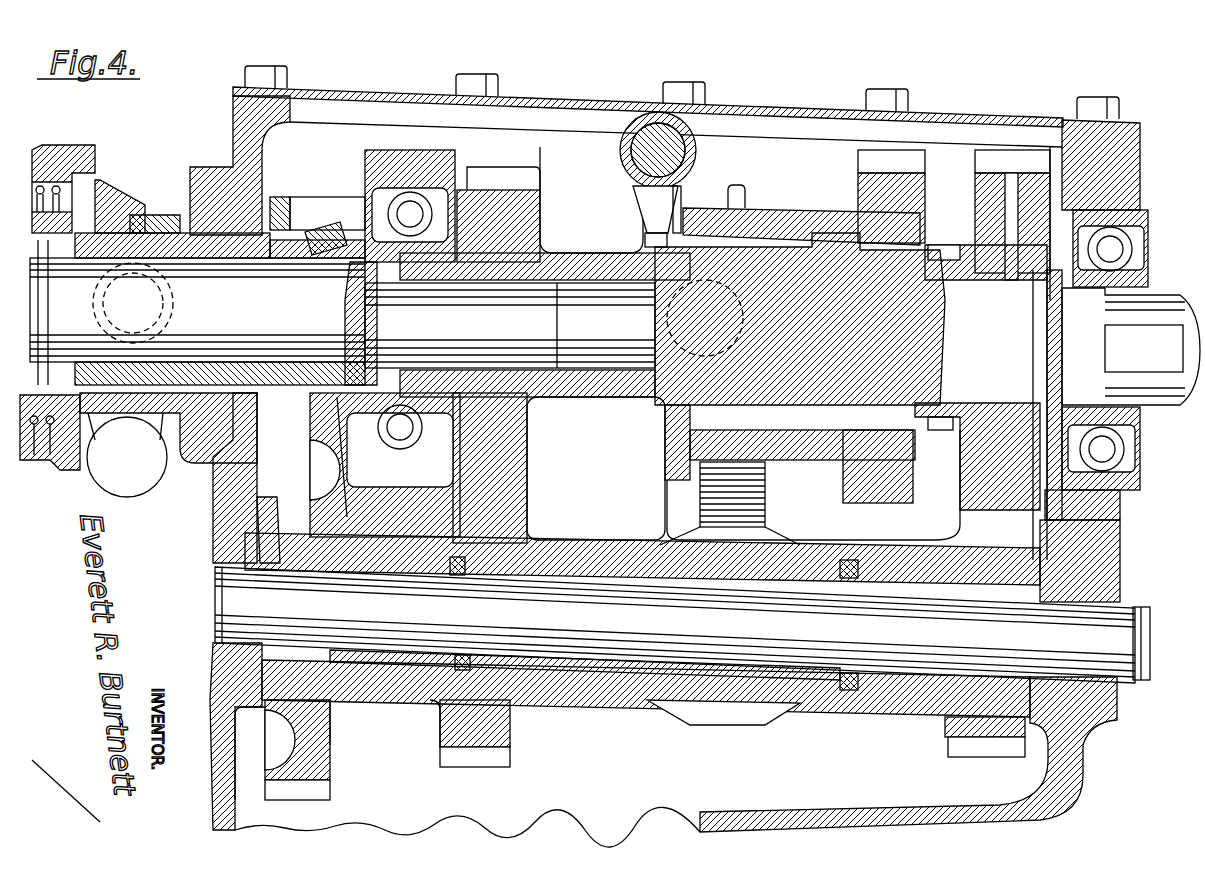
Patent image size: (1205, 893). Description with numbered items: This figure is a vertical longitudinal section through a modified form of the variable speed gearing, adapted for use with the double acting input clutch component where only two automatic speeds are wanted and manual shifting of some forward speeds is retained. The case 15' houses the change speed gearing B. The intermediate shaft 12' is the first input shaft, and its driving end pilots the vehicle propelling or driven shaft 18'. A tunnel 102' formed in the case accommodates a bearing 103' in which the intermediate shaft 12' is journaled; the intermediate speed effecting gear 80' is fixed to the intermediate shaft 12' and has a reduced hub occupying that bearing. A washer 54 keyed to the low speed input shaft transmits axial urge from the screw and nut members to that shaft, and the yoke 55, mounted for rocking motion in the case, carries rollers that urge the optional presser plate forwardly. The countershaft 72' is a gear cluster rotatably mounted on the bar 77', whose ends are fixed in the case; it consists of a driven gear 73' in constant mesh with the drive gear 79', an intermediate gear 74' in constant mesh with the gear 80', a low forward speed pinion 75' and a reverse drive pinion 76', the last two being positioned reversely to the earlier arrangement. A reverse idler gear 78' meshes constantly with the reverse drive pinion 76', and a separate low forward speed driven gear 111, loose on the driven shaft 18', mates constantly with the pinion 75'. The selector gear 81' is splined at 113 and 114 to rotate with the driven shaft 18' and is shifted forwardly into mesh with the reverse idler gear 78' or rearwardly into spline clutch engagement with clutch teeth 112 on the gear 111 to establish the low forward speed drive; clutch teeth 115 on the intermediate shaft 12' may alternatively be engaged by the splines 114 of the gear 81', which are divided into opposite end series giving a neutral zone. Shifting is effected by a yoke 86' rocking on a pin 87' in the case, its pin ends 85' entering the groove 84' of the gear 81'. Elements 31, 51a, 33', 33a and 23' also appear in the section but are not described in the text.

The case 15' is at (651, 150).
The washer 54 is at (62, 150).
The sleeve member 31 is at (108, 236).
The sleeve flange 51a is at (140, 226).
The drive gear 79' is at (317, 196).
The tunnel 102' is at (412, 192).
The intermediate speed effecting gear 80' is at (501, 202).
The change speed gearing B is at (580, 153).
The pin 87' is at (678, 150).
The groove 84' is at (801, 203).
The yoke 86' is at (637, 206).
The splines 113 is at (652, 216).
The clutch teeth 115 is at (645, 241).
The splines 114 is at (905, 248).
The bushing 33' is at (186, 264).
The roller bearing 33a is at (335, 256).
The intermediate shaft 12' is at (197, 312).
The driven shaft 18' is at (772, 319).
The pin ends 85' is at (663, 442).
The bearing 103' is at (385, 465).
The clutch teeth 112 is at (942, 432).
The ball bearing 23' is at (1119, 448).
The reverse idler gear 78' is at (724, 503).
The low forward speed driven gear 111 is at (975, 522).
The selector gear 81' is at (813, 492).
The yoke 55 is at (150, 489).
The bar 77' is at (682, 625).
The countershaft 72' is at (385, 722).
The driven gear 73' is at (303, 751).
The intermediate gear 74' is at (485, 746).
The reverse drive pinion 76' is at (723, 729).
The low forward speed pinion 75' is at (985, 748).